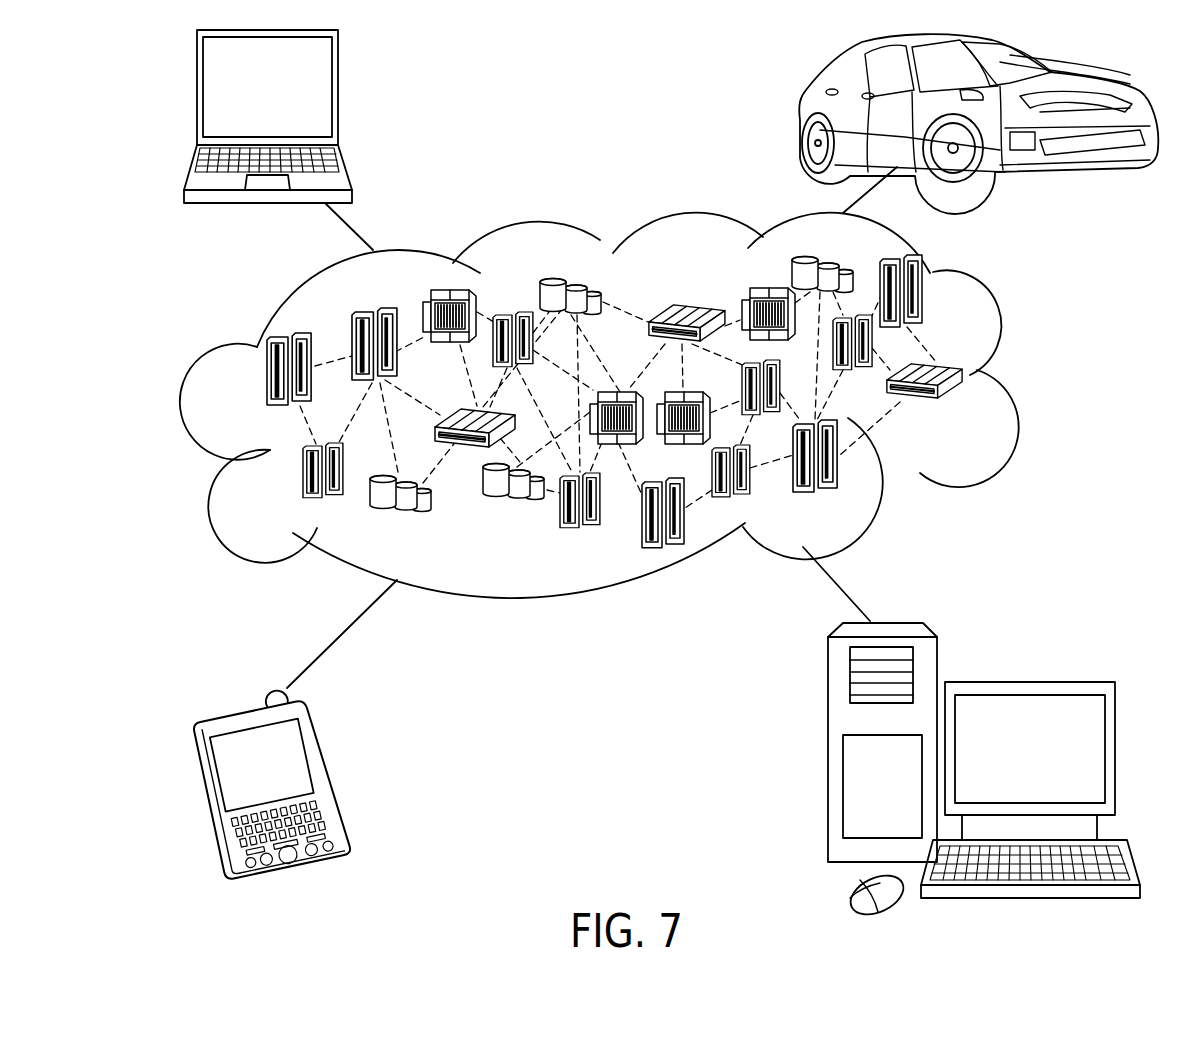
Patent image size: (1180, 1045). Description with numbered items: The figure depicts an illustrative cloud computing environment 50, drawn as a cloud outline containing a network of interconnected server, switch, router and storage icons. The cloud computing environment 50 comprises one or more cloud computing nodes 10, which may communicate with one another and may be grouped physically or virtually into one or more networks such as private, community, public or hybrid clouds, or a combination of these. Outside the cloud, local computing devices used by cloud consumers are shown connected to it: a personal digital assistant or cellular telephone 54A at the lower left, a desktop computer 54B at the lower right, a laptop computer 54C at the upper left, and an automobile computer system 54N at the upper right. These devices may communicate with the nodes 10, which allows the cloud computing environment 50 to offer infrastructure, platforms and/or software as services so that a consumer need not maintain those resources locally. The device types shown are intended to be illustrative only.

The cloud computing node 10 is at (965, 411).
The cloud computing environment 50 is at (1028, 382).
The personal digital assistant (PDA) or cellular telephone 54A is at (330, 780).
The desktop computer 54B is at (1028, 682).
The laptop computer 54C is at (340, 95).
The automobile computer system 54N is at (800, 110).